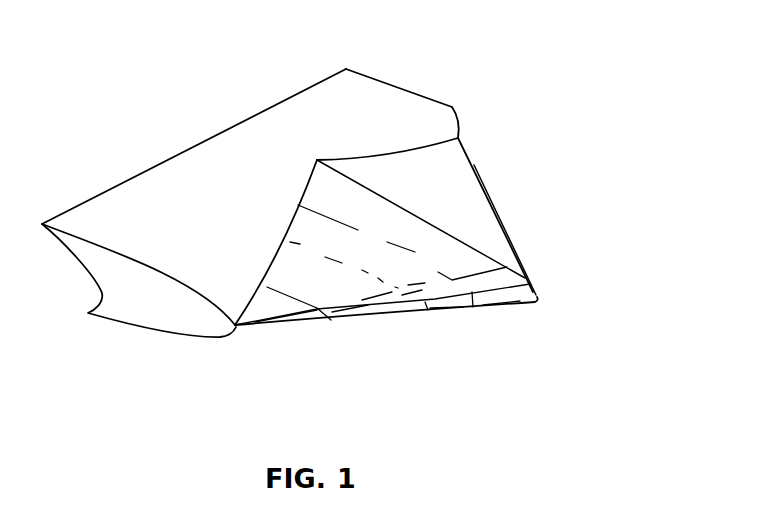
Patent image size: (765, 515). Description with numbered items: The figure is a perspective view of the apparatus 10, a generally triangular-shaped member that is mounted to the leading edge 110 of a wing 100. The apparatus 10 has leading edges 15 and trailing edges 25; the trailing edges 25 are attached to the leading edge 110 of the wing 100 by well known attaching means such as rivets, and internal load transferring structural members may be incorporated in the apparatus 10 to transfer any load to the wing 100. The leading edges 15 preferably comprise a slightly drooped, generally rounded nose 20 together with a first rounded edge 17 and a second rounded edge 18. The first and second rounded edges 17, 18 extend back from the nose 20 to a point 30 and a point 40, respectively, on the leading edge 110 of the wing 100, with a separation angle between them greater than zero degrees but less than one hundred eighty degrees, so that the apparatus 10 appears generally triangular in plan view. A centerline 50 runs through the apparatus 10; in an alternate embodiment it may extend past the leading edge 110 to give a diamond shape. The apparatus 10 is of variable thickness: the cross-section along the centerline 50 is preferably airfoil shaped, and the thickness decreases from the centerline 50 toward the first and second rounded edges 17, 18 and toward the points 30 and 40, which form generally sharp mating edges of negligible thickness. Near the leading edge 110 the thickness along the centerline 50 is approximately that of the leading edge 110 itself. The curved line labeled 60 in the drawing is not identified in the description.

The apparatus 10 is at (573, 183).
The wing 100 is at (390, 100).
The leading edge of wing 110 is at (460, 128).
The curved top edge 60 is at (317, 160).
The point 40 is at (459, 138).
The second rounded edge 18 is at (488, 190).
The centerline 50 is at (471, 239).
The trailing edges 25 is at (293, 228).
The point 30 is at (237, 329).
The nose 20 is at (537, 298).
The first rounded edge 17 is at (337, 322).
The leading edges 15 is at (513, 309).